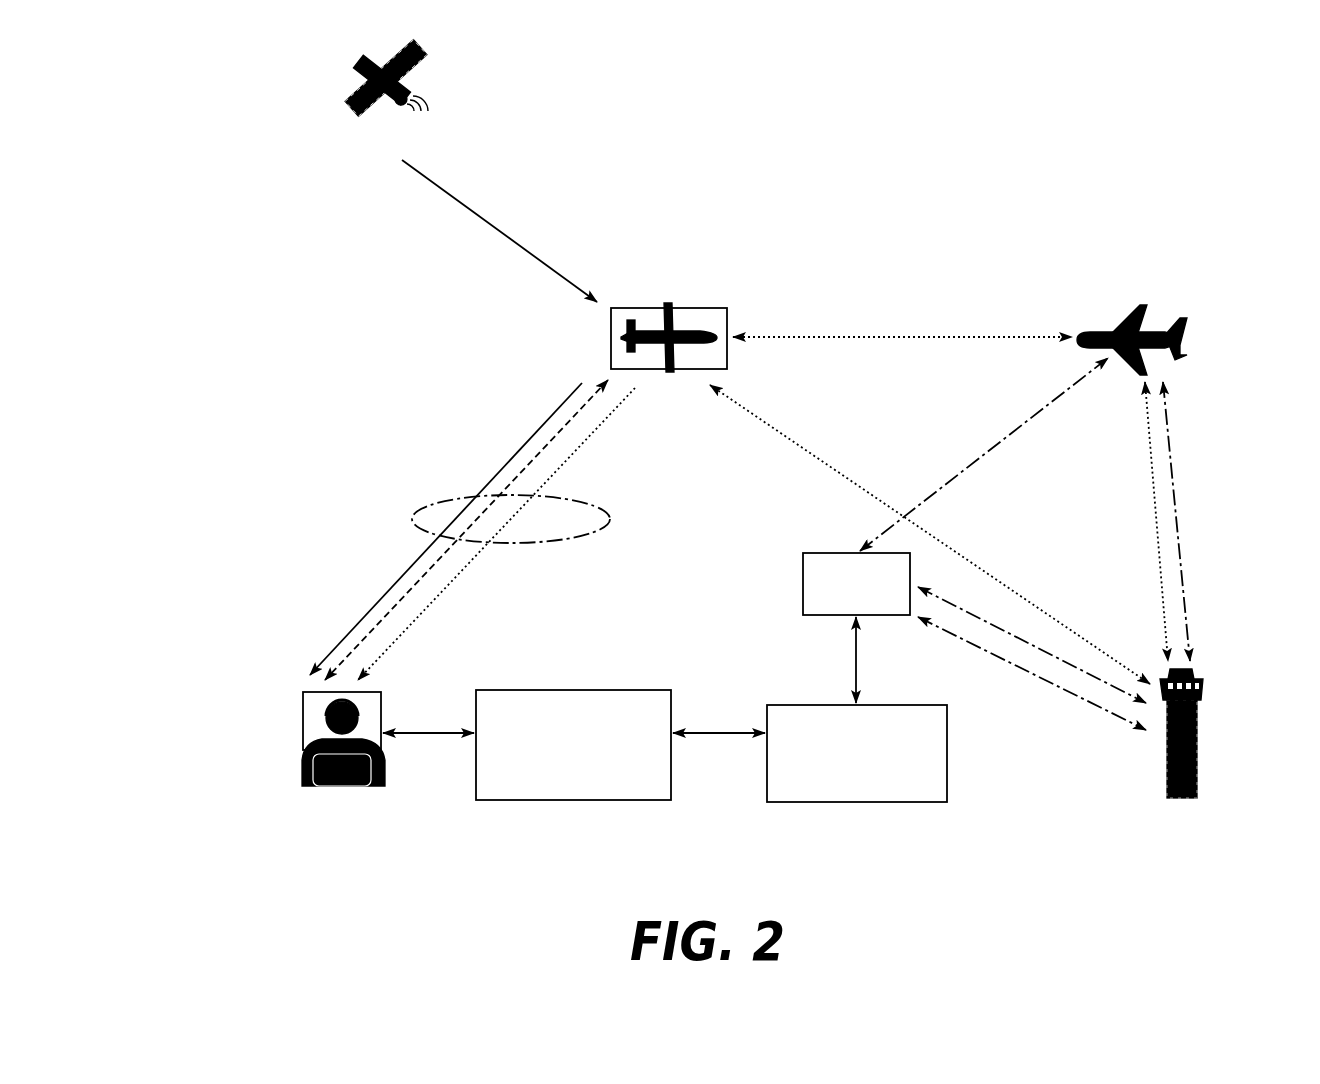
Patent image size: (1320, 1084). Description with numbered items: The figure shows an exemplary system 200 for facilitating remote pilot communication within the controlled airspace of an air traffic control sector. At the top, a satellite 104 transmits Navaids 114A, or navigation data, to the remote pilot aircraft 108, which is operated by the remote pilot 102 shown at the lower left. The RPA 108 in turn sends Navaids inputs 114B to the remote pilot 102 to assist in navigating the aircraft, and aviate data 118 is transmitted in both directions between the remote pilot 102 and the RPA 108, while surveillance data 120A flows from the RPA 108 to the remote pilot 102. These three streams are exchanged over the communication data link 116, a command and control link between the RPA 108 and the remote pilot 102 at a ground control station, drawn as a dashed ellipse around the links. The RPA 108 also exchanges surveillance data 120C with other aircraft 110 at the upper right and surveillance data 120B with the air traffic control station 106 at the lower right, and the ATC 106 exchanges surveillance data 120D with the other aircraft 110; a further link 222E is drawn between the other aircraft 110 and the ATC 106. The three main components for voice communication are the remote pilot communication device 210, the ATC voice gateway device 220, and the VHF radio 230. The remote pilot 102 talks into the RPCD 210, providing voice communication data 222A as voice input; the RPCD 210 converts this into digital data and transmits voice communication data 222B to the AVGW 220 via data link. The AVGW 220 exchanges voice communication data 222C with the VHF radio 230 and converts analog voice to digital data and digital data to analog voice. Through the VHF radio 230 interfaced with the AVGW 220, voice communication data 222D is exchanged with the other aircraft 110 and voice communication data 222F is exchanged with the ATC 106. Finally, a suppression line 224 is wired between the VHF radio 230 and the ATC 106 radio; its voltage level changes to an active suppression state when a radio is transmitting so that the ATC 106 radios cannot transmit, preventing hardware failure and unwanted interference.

The system 200 is at (238, 265).
The satellite 104 is at (424, 72).
The Navaids 114A is at (492, 228).
The remote pilot aircraft (RPA) 108 is at (673, 262).
The other aircraft (other A/c) 110 is at (1143, 265).
The surveillance data 120C is at (878, 330).
The Navaids inputs 114B is at (402, 566).
The aviate data 118 is at (595, 395).
The surveillance data 120A is at (465, 586).
The communication data link 116 is at (430, 510).
The remote pilot 102 is at (300, 768).
The remote pilot communication device (RPCD) 210 is at (577, 801).
The voice communication data 222A is at (427, 731).
The voice communication data 222B is at (730, 736).
The ATC voice gateway device (AVGW) 220 is at (866, 803).
The VHF radio 230 is at (801, 584).
The voice communication data 222C is at (854, 663).
The surveillance data 120B is at (822, 464).
The voice communication data 222D is at (978, 457).
The surveillance data 120D is at (1150, 458).
The communication link between other aircraft and ATC 222E is at (1182, 496).
The suppression line 224 is at (1017, 640).
The voice communication data 222F is at (1023, 680).
The air traffic control station (ATC) 106 is at (1199, 760).